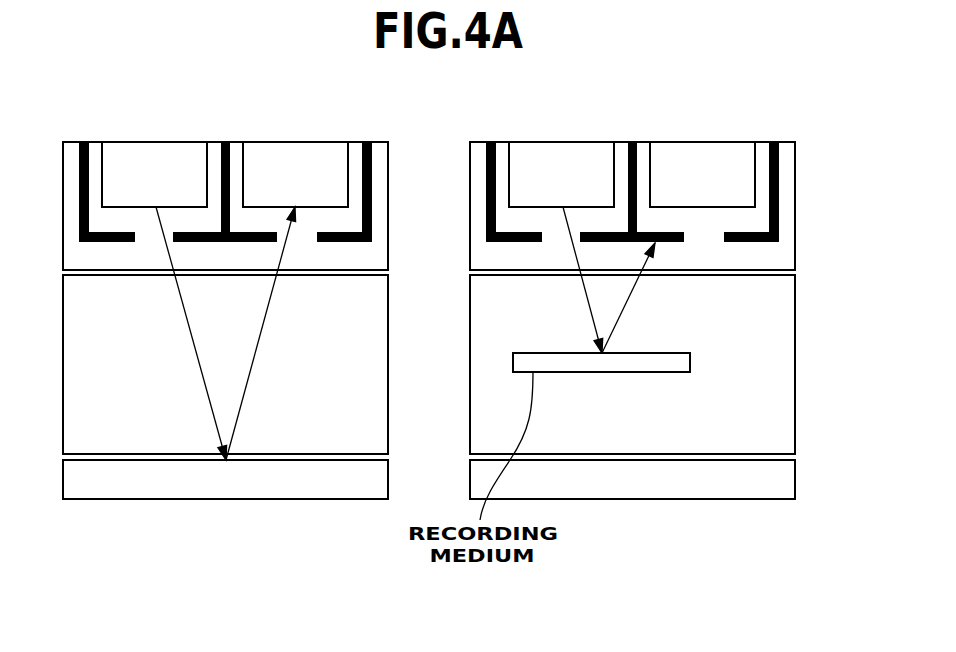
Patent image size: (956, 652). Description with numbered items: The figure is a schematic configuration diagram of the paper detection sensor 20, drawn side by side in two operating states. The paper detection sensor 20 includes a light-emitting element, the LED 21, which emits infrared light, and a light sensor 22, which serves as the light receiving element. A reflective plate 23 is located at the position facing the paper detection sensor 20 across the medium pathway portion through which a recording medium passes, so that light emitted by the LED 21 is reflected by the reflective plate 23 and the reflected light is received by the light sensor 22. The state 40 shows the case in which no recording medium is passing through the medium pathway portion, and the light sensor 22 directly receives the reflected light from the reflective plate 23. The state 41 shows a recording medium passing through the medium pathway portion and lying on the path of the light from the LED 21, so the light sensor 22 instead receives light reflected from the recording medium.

The paper detection sensor 20 is at (382, 142).
The light-emitting element (LED) 21 is at (156, 142).
The light sensor 22 is at (302, 142).
The reflective plate 23 is at (389, 478).
The state 40 is at (389, 377).
The state 41 is at (796, 377).